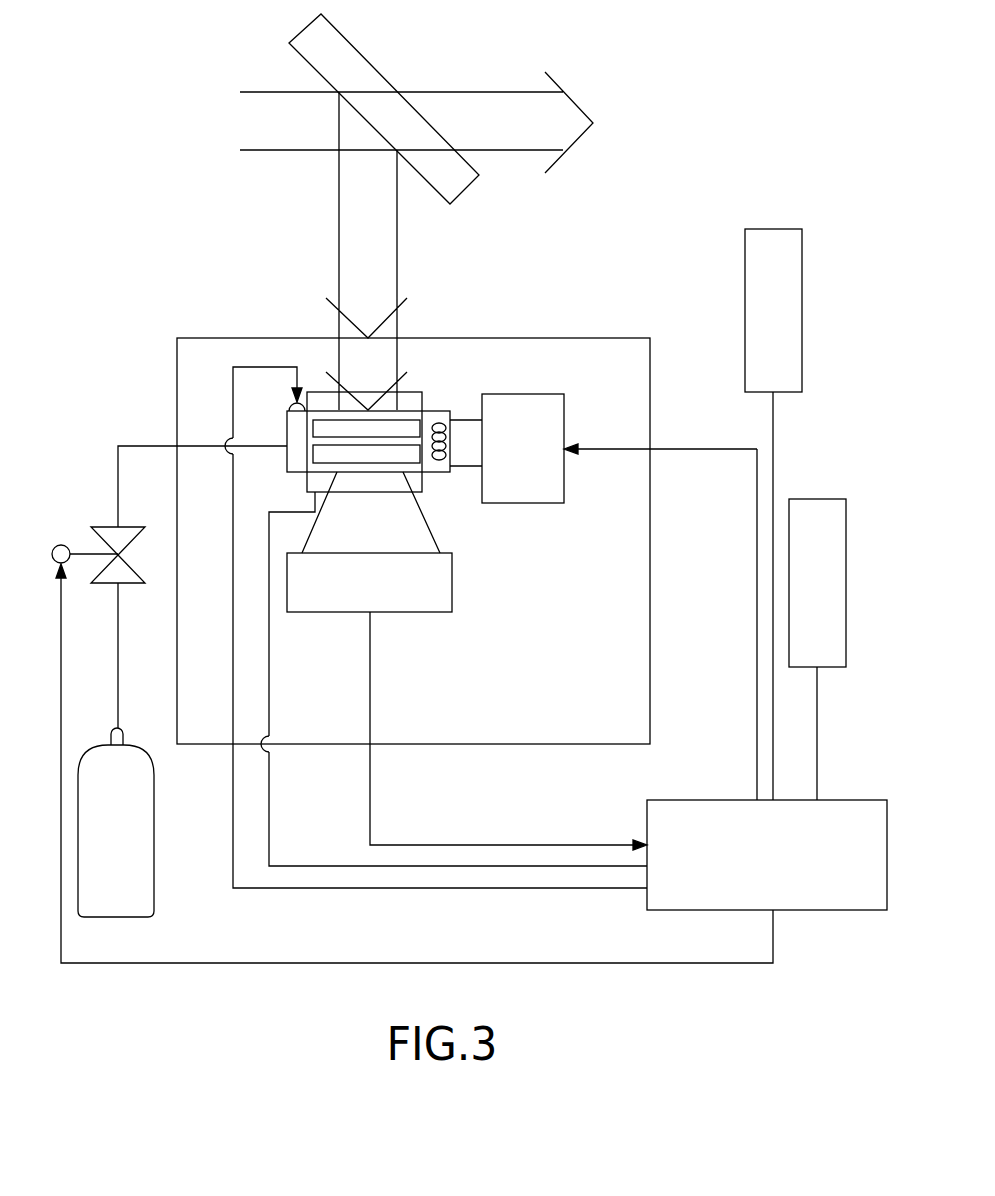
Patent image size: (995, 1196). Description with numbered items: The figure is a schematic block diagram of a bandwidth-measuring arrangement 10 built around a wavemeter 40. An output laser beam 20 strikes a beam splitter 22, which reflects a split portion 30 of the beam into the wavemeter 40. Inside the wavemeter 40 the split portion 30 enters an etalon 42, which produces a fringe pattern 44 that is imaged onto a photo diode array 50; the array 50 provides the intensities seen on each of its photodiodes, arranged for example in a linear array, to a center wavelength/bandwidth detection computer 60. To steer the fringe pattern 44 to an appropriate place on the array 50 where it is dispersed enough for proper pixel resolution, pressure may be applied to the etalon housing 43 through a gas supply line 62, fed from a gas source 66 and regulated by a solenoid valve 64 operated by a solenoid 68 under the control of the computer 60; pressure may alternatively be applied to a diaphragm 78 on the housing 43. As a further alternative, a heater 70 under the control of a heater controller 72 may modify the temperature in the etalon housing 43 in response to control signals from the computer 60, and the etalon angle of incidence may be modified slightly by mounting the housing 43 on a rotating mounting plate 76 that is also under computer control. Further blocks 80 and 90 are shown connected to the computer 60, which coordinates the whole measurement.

The laser processing system 10 is at (616, 197).
The output laser beam 20 is at (515, 105).
The beam splitter 22 is at (337, 57).
The split portion 30 is at (383, 283).
The wavemeter 40 is at (616, 318).
The etalon 42 is at (285, 464).
The etalon housing 43 is at (437, 477).
The fringe pattern 44 is at (407, 540).
The photo diode array 50 is at (428, 607).
The center wavelength/bandwidth detection computer 60 is at (725, 810).
The gas supply line 62 is at (118, 483).
The solenoid valve 64 is at (128, 567).
The gas cylinder 66 is at (133, 833).
The solenoid 68 is at (57, 542).
The heater 70 is at (463, 418).
The heater controller 72 is at (547, 418).
The rotating mounting plate 76 is at (324, 402).
The diaphragm 78 is at (287, 402).
The display 80 is at (832, 571).
The power supply 90 is at (787, 307).